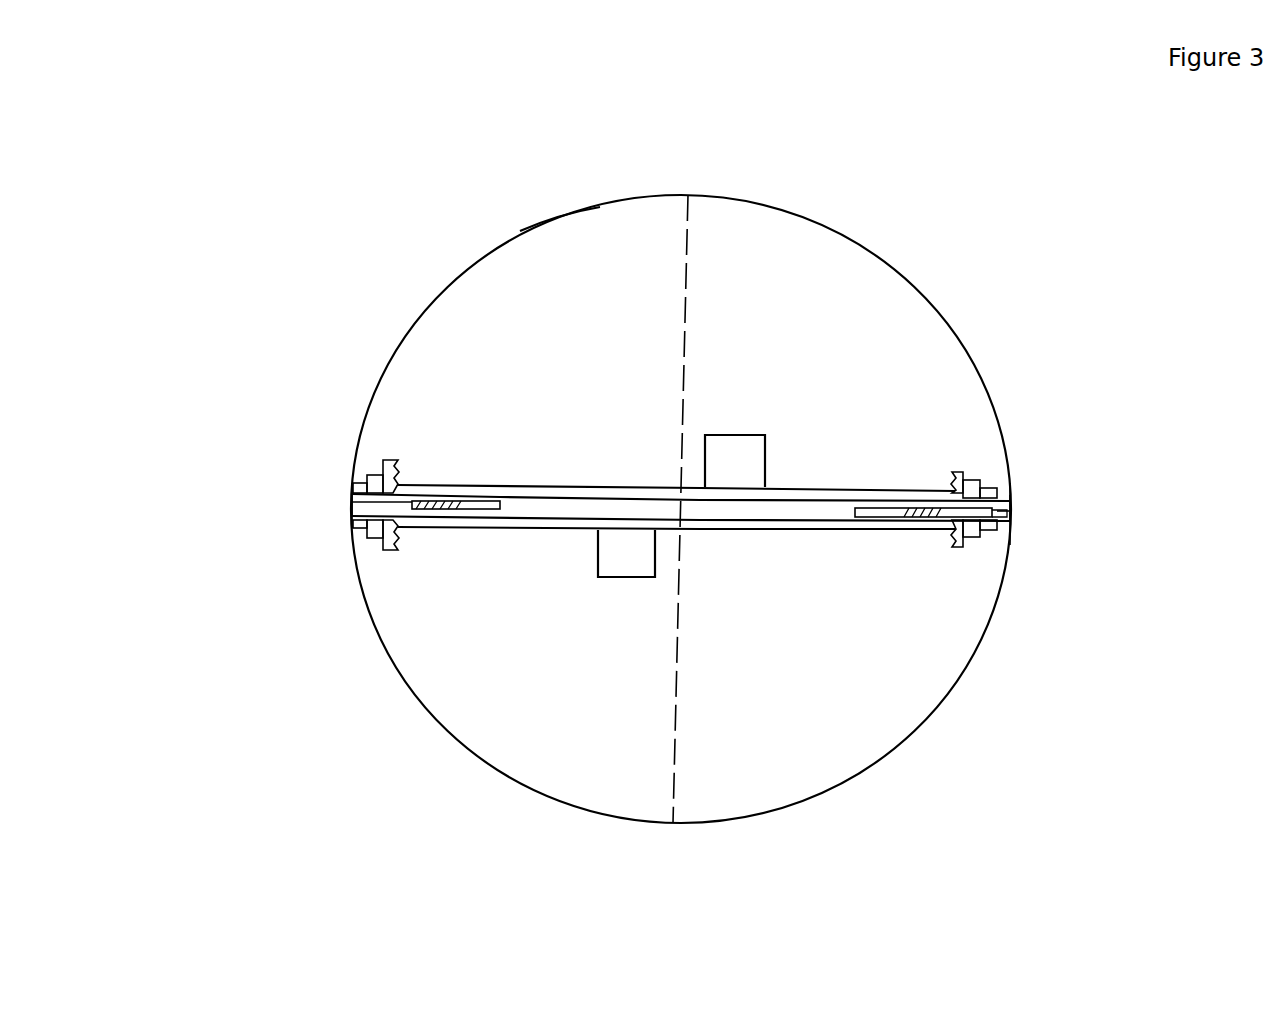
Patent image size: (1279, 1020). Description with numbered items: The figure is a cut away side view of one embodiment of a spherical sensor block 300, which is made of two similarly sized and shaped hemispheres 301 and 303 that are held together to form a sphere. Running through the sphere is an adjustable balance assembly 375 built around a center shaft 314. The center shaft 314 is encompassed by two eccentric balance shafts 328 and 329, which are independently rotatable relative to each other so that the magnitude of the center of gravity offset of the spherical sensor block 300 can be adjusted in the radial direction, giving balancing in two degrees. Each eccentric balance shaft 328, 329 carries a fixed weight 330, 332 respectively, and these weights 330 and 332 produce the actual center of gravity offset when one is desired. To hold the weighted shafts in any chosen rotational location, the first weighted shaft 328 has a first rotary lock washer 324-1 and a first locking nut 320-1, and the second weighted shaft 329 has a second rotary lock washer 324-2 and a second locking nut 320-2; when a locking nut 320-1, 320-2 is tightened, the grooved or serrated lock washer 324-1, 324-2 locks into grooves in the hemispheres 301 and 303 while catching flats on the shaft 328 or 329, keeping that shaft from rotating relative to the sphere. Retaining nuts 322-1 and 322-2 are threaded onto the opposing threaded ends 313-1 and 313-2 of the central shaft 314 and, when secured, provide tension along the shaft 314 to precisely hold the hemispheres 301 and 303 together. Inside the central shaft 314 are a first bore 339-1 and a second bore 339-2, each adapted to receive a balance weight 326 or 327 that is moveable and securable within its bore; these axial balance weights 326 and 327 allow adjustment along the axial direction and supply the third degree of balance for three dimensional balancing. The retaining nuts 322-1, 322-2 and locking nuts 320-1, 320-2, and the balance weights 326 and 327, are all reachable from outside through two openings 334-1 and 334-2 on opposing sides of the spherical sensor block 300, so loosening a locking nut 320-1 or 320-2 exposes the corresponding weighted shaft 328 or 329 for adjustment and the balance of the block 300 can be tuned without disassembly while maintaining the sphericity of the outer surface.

The spherical sensor block 300 is at (1110, 907).
The hemisphere 301 is at (557, 218).
The hemisphere 303 is at (845, 233).
The threaded end 313-1 is at (355, 515).
The threaded end 313-2 is at (1007, 543).
The center shaft 314 is at (590, 508).
The first locking nut 320-1 is at (362, 475).
The second locking nut 320-2 is at (970, 481).
The retaining nut 322-1 is at (355, 525).
The retaining nut 322-2 is at (990, 495).
The first rotary lock washer 324-1 is at (388, 470).
The second rotary lock washer 324-2 is at (960, 462).
The balance weight 326 is at (442, 502).
The balance weight 327 is at (925, 512).
The eccentric balance shaft 328 is at (475, 525).
The eccentric balance shaft 329 is at (808, 533).
The weight 330 is at (600, 578).
The weight 332 is at (765, 435).
The opening 334-1 is at (355, 510).
The opening 334-2 is at (1010, 518).
The first bore 339-1 is at (353, 503).
The second bore 339-2 is at (1010, 513).
The adjustable balance assembly 375 is at (693, 511).